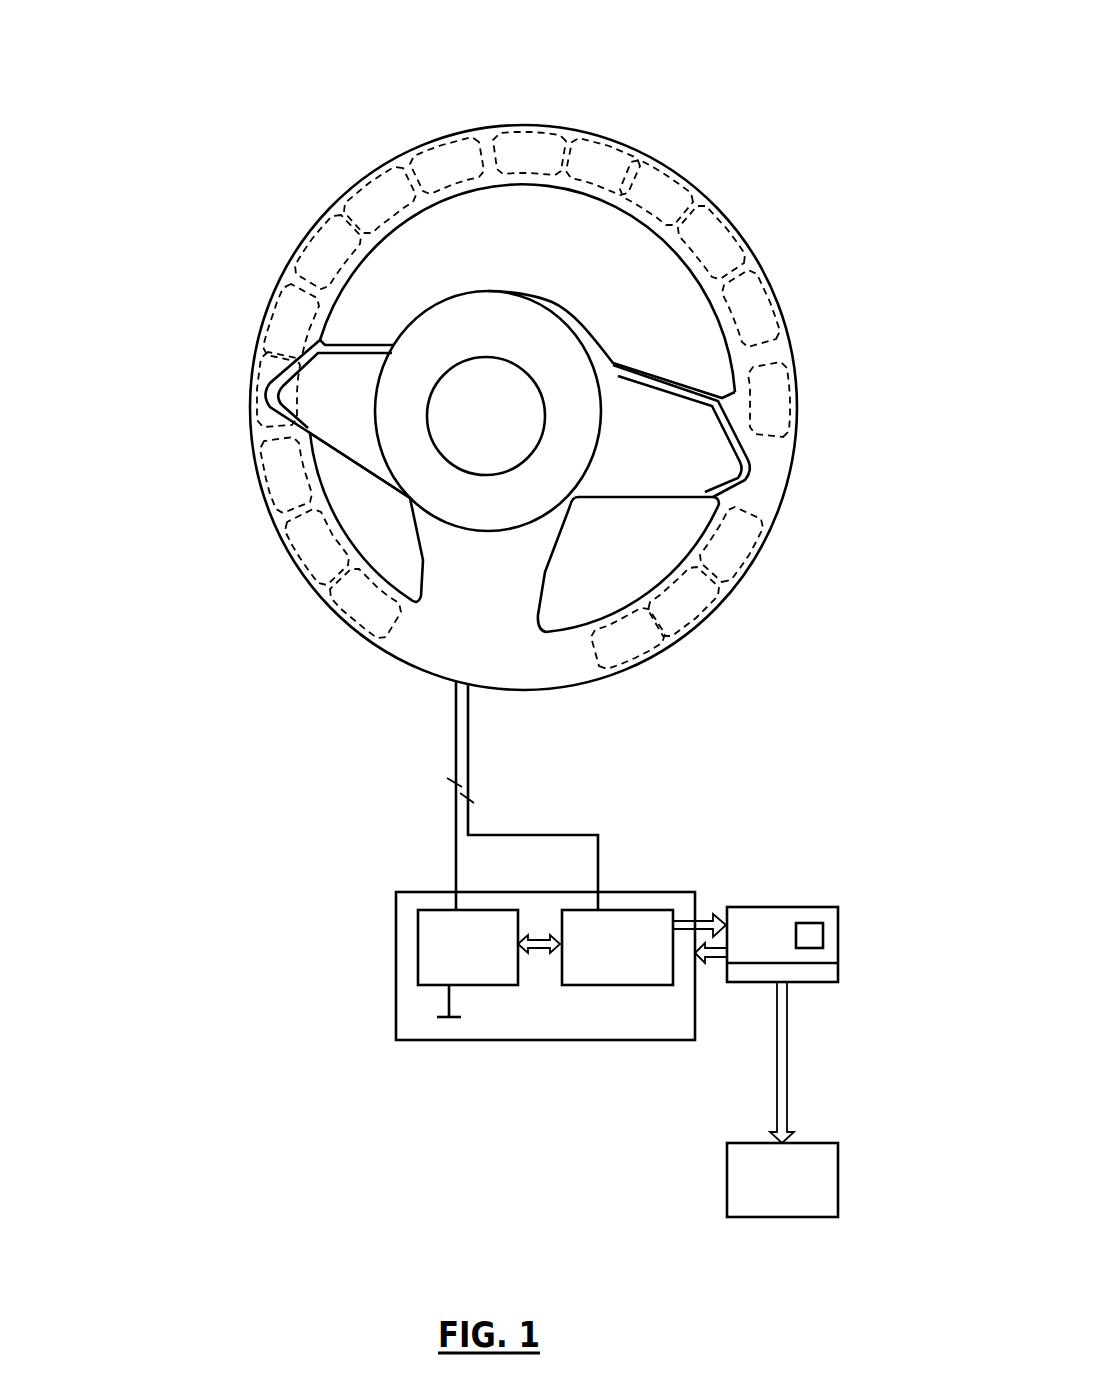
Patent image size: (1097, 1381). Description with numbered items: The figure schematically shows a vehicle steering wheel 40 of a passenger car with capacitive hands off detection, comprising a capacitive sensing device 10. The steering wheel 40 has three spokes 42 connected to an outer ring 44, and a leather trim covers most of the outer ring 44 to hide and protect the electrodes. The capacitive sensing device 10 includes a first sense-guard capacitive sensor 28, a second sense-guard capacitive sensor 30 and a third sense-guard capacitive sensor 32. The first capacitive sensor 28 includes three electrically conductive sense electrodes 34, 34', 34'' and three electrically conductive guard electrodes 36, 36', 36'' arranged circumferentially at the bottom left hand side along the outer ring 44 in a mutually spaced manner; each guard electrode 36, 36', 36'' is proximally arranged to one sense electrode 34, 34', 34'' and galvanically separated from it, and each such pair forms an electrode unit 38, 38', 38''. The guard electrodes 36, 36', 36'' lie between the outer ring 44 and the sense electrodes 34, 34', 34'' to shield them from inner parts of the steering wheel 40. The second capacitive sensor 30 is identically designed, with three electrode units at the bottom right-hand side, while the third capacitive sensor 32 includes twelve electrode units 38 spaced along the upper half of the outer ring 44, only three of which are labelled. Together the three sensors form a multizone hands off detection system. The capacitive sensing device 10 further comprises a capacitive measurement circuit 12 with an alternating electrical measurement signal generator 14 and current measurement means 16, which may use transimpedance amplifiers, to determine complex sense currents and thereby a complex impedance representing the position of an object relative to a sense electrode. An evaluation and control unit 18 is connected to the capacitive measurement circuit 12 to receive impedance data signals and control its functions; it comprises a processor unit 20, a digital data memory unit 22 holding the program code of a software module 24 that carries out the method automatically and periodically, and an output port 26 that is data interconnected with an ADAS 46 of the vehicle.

The capacitive sensing device 10 is at (200, 872).
The capacitive measurement circuit 12 is at (509, 960).
The alternating electrical measurement signal generator 14 is at (448, 957).
The current measurement means 16 is at (601, 957).
The evaluation and control unit 18 is at (793, 984).
The processor unit 20 is at (812, 928).
The digital data memory unit 22 is at (790, 1018).
The software module 24 is at (793, 970).
The output port 26 is at (777, 982).
The first sense-guard capacitive sensor 28 is at (503, 392).
The second sense-guard capacitive sensor 30 is at (605, 349).
The third sense-guard capacitive sensor 32 is at (482, 100).
The sense electrode 34 is at (526, 400).
The guard electrode 36 is at (526, 400).
The sense electrode 34' is at (236, 530).
The guard electrode 36' is at (236, 530).
The sense electrode 34'' is at (313, 612).
The guard electrode 36'' is at (313, 612).
The electrode unit 38 is at (481, 400).
The electrode unit 38' is at (143, 666).
The electrode unit 38'' is at (185, 753).
The steering wheel 40 is at (481, 392).
The spoke 42 is at (660, 388).
The outer ring 44 is at (485, 172).
The ADAS 46 is at (766, 1193).